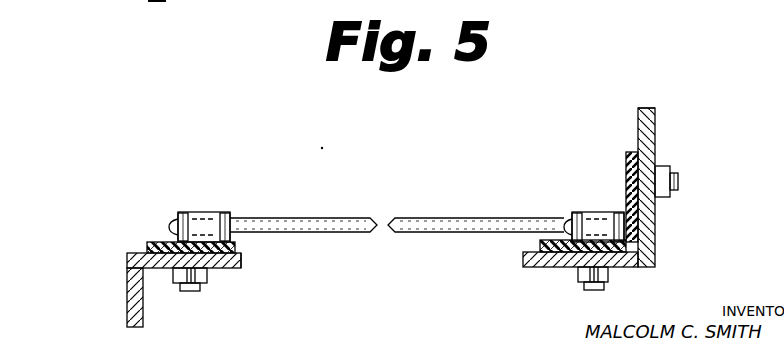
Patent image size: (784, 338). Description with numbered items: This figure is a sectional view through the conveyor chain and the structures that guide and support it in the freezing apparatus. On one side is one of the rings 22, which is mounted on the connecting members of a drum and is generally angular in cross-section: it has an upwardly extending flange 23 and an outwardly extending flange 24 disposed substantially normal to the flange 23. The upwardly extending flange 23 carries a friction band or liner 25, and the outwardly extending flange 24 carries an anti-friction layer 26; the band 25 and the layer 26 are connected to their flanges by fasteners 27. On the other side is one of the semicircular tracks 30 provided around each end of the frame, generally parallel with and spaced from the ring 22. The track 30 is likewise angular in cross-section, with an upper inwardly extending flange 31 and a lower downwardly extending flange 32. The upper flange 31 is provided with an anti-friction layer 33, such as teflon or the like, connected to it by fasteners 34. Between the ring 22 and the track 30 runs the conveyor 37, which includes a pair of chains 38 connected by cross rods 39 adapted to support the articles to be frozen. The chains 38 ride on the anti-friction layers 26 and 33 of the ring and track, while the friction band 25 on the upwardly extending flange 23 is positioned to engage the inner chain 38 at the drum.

The ring 22 is at (657, 134).
The upwardly extending flange 23 is at (637, 124).
The outwardly extending flange 24 is at (555, 265).
The friction band 25 is at (626, 168).
The anti-friction layer 26 is at (542, 244).
The fasteners 27 is at (680, 184).
The semicircular track 30 is at (122, 262).
The upper inwardly extending flange 31 is at (242, 266).
The lower downwardly extending flange 32 is at (126, 297).
The anti-friction layer 33 is at (152, 242).
The fasteners 34 is at (190, 292).
The conveyor 37 is at (306, 205).
The chains 38 is at (218, 205).
The cross rods 39 is at (432, 190).